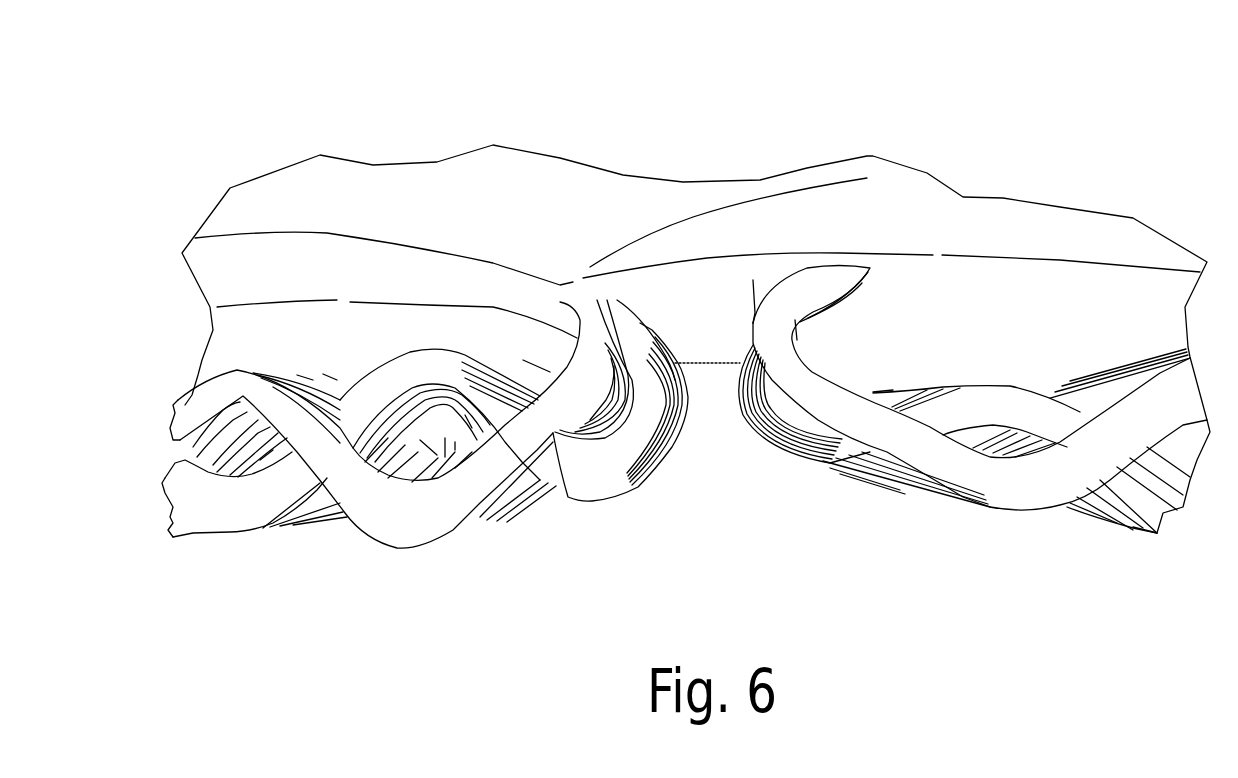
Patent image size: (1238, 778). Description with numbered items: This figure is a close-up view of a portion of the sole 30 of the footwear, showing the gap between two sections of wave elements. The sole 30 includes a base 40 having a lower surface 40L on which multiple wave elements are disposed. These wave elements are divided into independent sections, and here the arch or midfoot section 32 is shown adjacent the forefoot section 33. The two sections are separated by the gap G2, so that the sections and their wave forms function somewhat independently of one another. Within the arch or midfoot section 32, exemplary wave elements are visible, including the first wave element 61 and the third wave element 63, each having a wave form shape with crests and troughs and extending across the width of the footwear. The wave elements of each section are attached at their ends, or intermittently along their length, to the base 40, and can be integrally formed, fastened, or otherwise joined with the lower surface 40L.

The sole 30 is at (1023, 145).
The arch or midfoot section 32 is at (1047, 550).
The forefoot section 33 is at (443, 570).
The base 40 is at (760, 163).
The lower surface 40L is at (707, 293).
The first wave element 61 is at (783, 413).
The third wave element 63 is at (785, 417).
The gap G2 is at (728, 348).